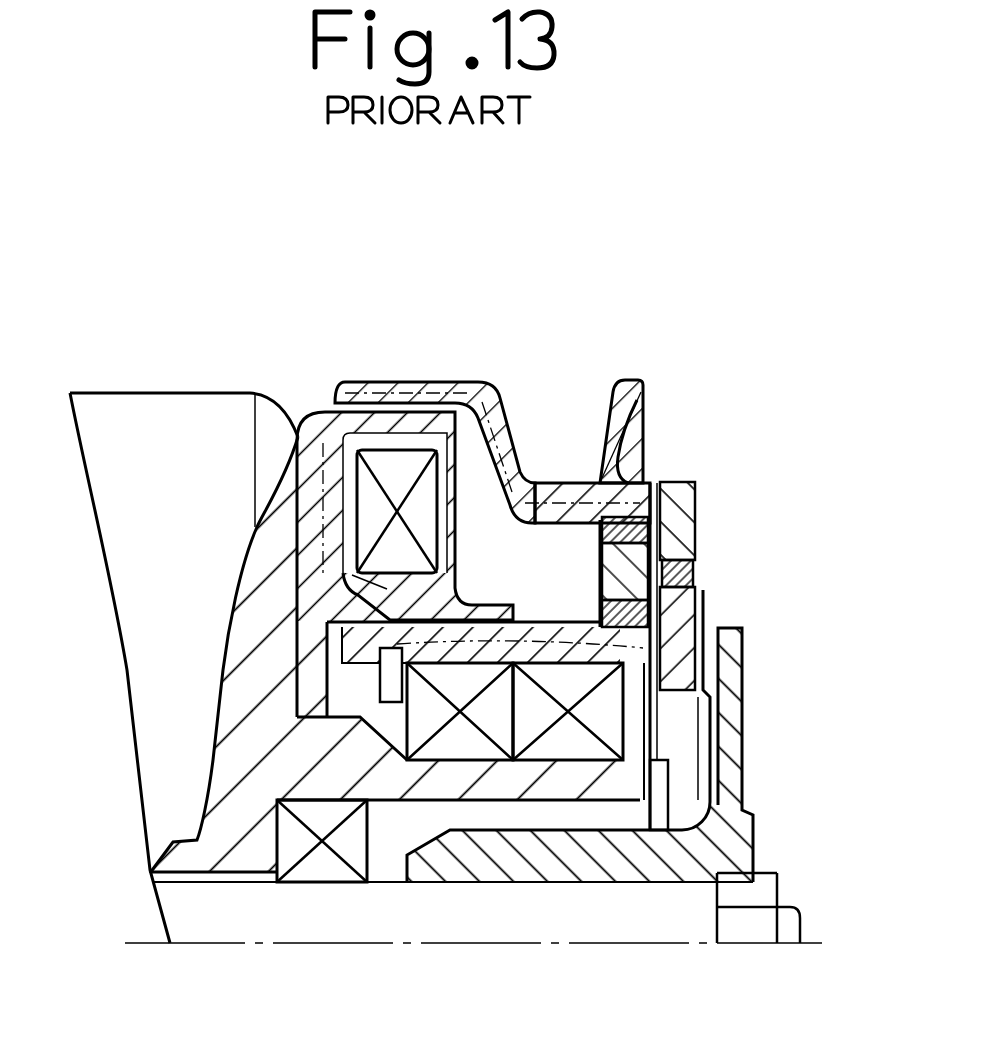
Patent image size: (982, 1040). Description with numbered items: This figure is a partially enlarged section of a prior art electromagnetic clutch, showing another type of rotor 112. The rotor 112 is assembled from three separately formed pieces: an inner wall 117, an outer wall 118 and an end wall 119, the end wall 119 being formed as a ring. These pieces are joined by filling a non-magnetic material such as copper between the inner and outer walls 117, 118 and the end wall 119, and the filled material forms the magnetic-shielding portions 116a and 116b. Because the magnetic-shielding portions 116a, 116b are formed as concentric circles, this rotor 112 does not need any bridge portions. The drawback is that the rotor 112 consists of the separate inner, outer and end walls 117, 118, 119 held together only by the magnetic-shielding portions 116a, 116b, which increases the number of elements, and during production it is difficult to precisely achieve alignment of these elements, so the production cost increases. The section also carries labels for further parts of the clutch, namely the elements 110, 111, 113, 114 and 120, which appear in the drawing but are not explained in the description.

The spindle motor (prior art) 110 is at (713, 335).
The upper coil 111 is at (403, 467).
The rotor 112 is at (645, 460).
The housing base 113 is at (710, 663).
The bearing element 114 is at (697, 563).
The magnetic-shielding portion 116a is at (648, 606).
The magnetic-shielding portion 116b is at (696, 485).
The inner wall 117 is at (505, 640).
The outer wall 118 is at (563, 483).
The end wall 119 is at (613, 577).
The cover 120 is at (512, 420).